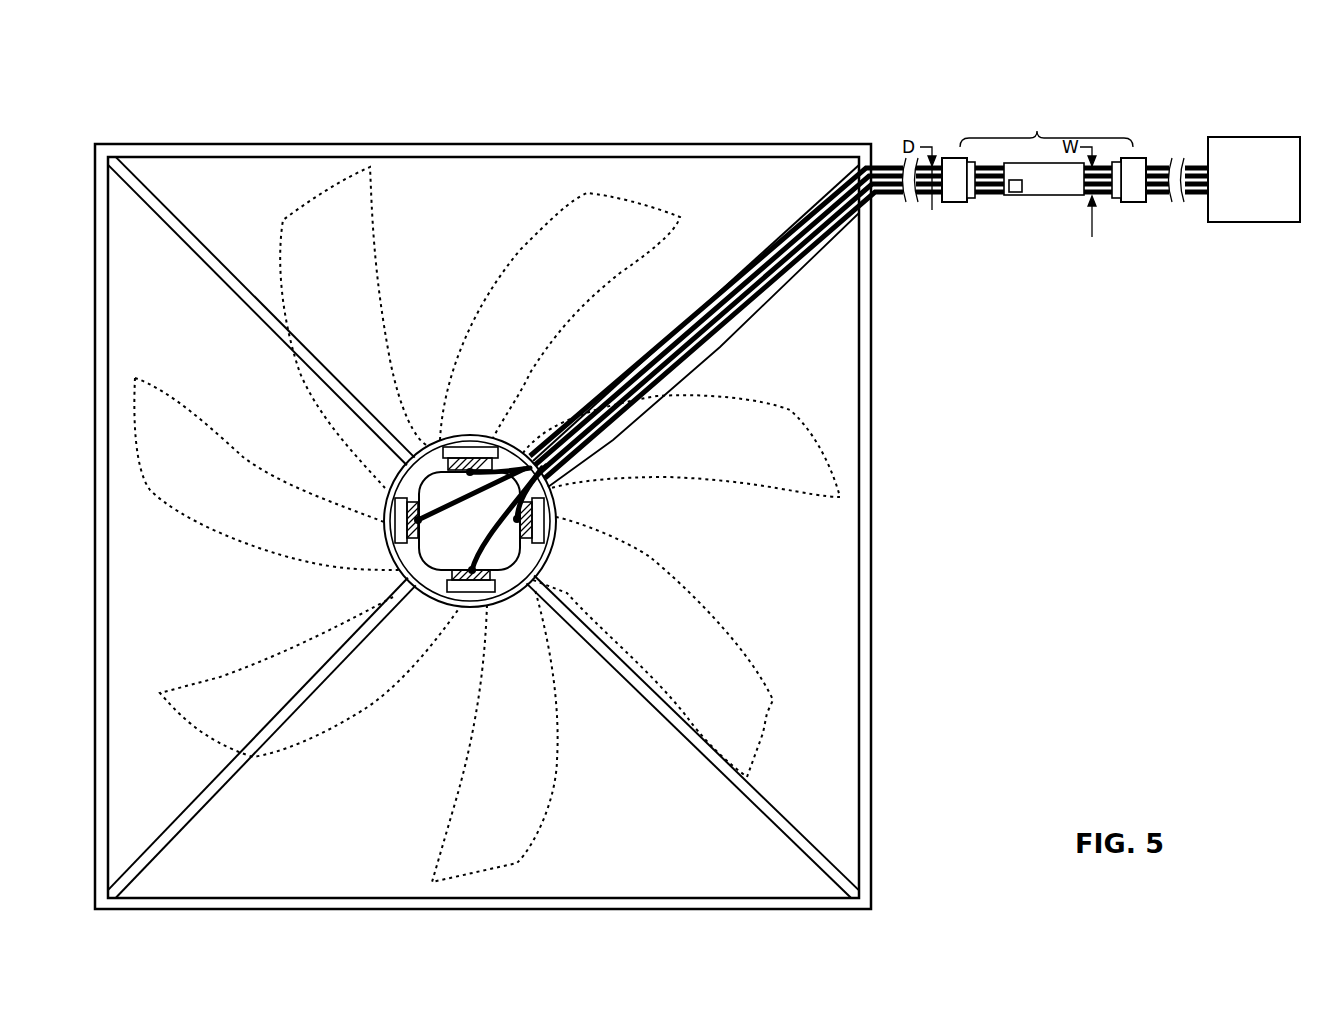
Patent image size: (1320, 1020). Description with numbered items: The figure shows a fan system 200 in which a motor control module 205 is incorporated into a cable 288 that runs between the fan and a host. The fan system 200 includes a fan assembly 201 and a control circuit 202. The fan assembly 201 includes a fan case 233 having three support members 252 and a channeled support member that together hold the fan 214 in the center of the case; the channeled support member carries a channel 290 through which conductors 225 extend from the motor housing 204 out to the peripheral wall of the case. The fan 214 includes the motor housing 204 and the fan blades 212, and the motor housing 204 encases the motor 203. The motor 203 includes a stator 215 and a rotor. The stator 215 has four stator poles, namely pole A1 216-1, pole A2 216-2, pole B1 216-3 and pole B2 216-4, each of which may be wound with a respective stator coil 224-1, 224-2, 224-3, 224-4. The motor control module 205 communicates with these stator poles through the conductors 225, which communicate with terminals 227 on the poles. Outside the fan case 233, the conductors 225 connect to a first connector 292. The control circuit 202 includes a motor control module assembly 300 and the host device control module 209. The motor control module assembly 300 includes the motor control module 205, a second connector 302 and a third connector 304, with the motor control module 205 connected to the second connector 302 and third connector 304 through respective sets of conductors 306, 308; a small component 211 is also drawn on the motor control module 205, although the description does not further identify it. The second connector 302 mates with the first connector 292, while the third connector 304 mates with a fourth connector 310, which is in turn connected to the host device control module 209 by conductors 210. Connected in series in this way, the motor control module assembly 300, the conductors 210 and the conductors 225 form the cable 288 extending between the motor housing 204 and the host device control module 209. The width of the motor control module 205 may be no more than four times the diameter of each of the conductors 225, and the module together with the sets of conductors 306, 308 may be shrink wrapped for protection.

The fan system 200 is at (206, 89).
The fan assembly 201 is at (879, 354).
The control circuit 202 is at (1068, 262).
The motor 203 is at (513, 442).
The motor housing 204 is at (572, 481).
The motor control module 205 is at (1044, 218).
The host device control module 209 is at (1258, 137).
The conductors 210 is at (1168, 196).
The sensor 211 is at (1015, 194).
The fan blades 212 is at (378, 289).
The fan 214 is at (680, 216).
The stator 215 is at (428, 567).
The pole A1 216-1 is at (425, 425).
The pole A2 216-2 is at (470, 605).
The pole B1 216-3 is at (360, 535).
The pole B2 216-4 is at (568, 534).
The stator coil 224-1 is at (456, 403).
The stator coil 224-2 is at (450, 631).
The stator coil 224-3 is at (407, 550).
The stator coil 224-4 is at (537, 555).
The conductors 225 is at (747, 272).
The terminals 227 is at (420, 521).
The fan case 233 is at (873, 553).
The support members 252 is at (208, 272).
The cable 288 is at (882, 166).
The channel 290 is at (786, 286).
The first connector 292 is at (943, 177).
The motor control module assembly 300 is at (1046, 190).
The second connector 302 is at (976, 200).
The third connector 304 is at (1115, 201).
The first set of conductors 306 is at (996, 197).
The second set of conductors 308 is at (1100, 196).
The fourth connector 310 is at (1145, 181).